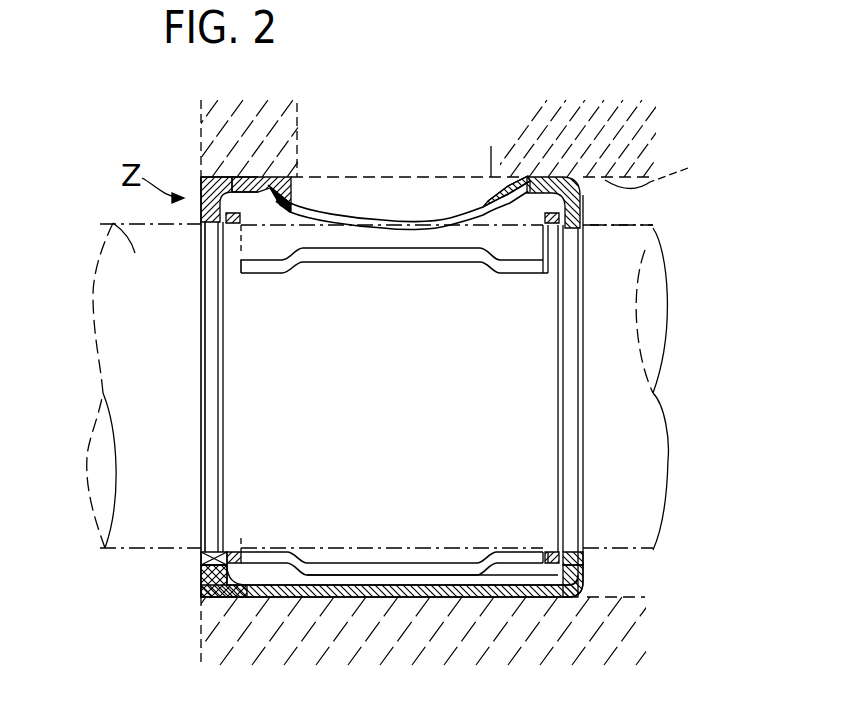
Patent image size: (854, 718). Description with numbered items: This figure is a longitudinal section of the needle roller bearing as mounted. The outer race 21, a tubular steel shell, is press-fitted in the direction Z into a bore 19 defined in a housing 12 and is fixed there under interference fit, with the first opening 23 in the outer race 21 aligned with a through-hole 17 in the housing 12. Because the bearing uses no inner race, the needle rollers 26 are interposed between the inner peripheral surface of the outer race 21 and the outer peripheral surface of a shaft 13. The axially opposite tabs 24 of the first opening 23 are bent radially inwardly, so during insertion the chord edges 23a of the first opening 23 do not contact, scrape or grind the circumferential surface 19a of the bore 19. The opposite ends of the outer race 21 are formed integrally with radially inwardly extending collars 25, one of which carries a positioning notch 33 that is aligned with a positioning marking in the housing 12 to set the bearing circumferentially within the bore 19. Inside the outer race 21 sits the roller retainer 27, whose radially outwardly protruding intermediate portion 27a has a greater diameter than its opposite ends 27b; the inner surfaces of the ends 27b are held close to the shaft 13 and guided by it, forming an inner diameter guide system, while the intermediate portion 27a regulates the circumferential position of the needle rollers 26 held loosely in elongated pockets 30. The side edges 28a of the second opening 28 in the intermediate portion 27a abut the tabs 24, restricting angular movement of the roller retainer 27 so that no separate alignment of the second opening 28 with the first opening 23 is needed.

The housing 12 is at (214, 118).
The shaft 13 is at (137, 247).
The through-hole 17 is at (491, 147).
The bore 19 is at (620, 215).
The circumferential surface of the bore 19a is at (675, 166).
The outer race 21 is at (252, 600).
The first opening 23 is at (336, 212).
The chord edges 23a is at (287, 198).
The tabs 24 is at (276, 185).
The collars 25 is at (204, 577).
The needle rollers 26 is at (517, 600).
The roller retainer 27 is at (205, 176).
The intermediate portion 27a is at (380, 588).
The opposite ends of the roller retainer 27b is at (205, 598).
The second opening 28 is at (540, 242).
The side edges of the second opening 28a is at (405, 258).
The elongated pockets 30 is at (328, 576).
The positioning notch 33 is at (226, 558).